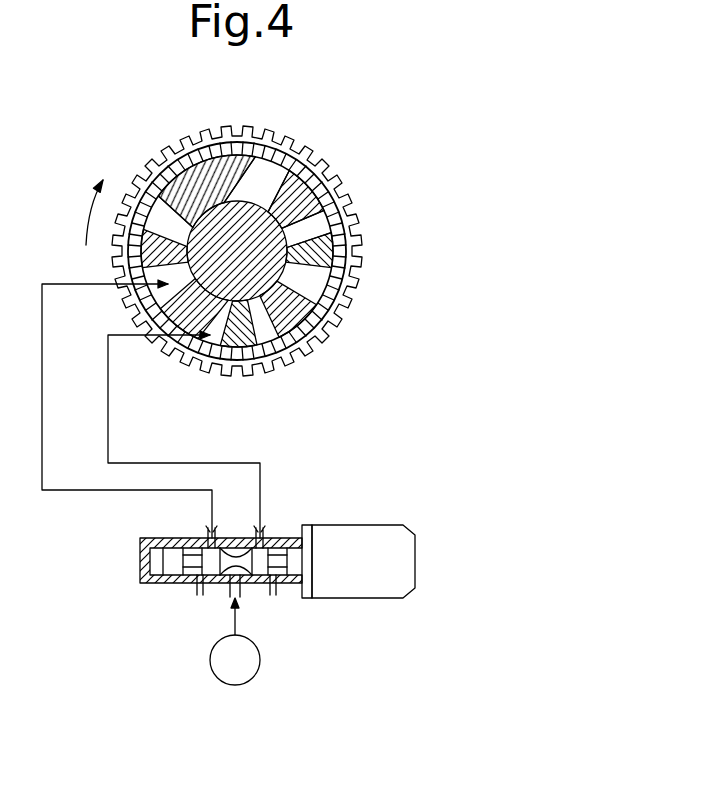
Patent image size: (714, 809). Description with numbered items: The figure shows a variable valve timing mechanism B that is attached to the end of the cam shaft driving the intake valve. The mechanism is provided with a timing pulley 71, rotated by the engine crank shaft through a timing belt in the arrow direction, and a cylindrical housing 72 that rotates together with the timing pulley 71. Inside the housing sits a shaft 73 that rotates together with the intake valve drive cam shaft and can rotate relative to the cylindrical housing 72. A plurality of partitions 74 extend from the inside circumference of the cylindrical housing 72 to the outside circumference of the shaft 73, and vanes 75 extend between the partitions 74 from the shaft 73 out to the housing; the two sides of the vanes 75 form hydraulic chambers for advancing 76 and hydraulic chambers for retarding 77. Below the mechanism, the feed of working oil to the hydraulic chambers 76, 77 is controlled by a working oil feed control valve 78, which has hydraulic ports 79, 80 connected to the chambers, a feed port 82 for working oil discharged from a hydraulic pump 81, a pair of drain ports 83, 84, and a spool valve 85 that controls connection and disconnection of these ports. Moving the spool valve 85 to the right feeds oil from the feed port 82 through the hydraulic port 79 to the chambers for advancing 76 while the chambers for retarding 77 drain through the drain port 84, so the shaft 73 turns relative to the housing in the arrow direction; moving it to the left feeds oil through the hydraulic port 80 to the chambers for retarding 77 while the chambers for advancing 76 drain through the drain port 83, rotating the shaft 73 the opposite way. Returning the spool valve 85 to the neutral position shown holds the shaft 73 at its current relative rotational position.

The variable valve timing mechanism B is at (375, 188).
The timing pulley 71 is at (332, 295).
The cylindrical housing 72 is at (326, 340).
The shaft 73 is at (268, 172).
The partitions 74 is at (210, 165).
The vanes 75 is at (162, 185).
The hydraulic chambers for advancing 76 is at (307, 278).
The hydraulic chambers for retarding 77 is at (75, 284).
The working oil feed control valve 78 is at (390, 523).
The hydraulic port 79 is at (263, 530).
The hydraulic port 80 is at (208, 533).
The hydraulic pump 81 is at (258, 668).
The feed port 82 is at (230, 592).
The drain port 83 is at (273, 590).
The drain port 84 is at (200, 590).
The spool valve 85 is at (175, 562).